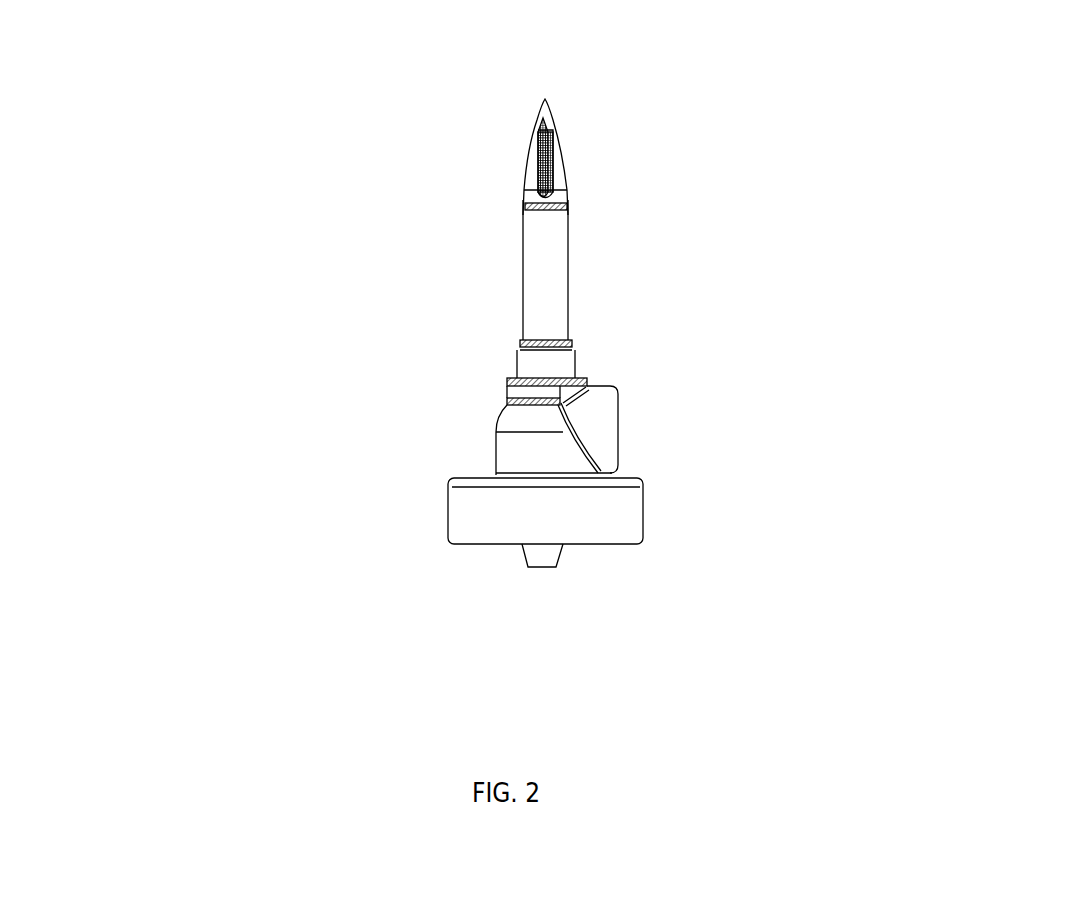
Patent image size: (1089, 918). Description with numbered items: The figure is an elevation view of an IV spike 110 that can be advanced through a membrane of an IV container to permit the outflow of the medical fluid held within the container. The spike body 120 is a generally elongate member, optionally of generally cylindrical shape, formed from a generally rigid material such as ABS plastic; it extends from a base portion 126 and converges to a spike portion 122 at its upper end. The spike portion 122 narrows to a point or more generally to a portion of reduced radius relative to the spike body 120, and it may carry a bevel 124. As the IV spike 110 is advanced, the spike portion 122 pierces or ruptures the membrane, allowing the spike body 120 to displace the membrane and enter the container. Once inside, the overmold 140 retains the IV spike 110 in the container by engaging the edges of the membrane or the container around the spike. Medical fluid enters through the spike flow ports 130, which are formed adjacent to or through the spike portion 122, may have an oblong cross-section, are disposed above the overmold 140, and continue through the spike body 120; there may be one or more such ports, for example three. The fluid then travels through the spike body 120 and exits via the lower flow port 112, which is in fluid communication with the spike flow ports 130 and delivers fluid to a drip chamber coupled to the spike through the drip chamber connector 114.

The IV spike 110 is at (876, 88).
The lower flow port 112 is at (522, 554).
The drip chamber connector 114 is at (627, 542).
The spike body 120 is at (540, 195).
The spike portion 122 is at (541, 115).
The bevel 124 is at (553, 123).
The base portion 126 is at (572, 350).
The spike flow ports 130 is at (562, 191).
The overmold 140 is at (523, 270).